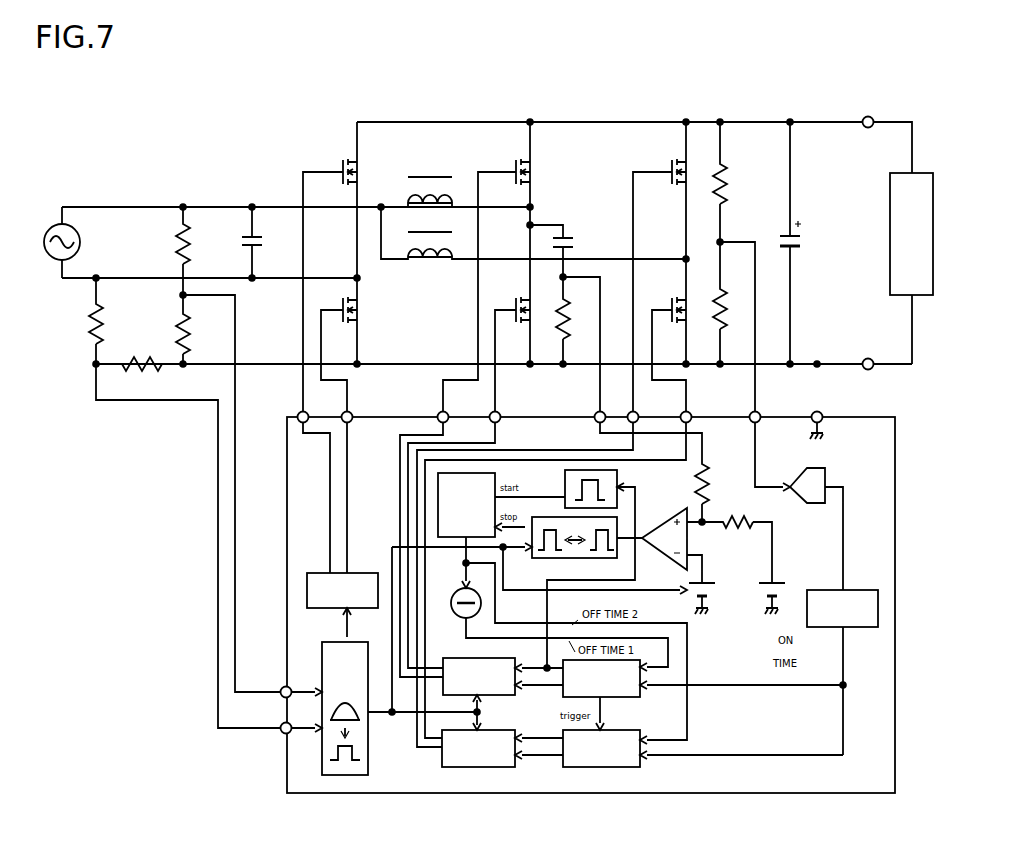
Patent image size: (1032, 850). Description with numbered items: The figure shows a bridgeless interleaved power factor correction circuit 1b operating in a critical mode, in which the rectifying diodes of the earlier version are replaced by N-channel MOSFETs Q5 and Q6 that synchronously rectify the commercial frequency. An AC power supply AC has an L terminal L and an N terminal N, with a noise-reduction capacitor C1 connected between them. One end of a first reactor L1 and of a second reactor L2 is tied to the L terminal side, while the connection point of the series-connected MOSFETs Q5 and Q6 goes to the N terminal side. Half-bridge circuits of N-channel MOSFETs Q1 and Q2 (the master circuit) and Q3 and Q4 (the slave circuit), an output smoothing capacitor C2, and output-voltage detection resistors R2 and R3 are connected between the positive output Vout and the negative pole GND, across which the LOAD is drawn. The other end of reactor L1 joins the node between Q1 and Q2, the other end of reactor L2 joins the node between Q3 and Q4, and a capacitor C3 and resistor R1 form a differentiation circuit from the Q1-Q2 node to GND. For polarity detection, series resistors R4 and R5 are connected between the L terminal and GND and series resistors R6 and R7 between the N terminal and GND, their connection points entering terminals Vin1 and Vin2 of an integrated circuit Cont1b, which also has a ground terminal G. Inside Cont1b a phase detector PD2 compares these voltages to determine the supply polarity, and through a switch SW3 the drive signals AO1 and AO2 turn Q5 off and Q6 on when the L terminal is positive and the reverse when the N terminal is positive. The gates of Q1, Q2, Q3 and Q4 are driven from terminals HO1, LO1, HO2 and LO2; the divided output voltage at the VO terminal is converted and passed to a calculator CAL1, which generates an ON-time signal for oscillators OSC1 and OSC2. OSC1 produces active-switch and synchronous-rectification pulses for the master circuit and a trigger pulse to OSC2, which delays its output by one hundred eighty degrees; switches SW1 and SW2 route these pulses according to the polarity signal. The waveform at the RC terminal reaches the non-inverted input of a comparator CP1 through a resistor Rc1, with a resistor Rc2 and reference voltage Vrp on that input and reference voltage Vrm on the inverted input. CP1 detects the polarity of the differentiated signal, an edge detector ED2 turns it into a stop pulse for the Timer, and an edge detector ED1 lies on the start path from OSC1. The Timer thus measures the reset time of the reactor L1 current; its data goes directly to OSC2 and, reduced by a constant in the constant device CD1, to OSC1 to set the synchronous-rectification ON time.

The bridgeless interleaved power factor correction circuit 1b is at (515, 85).
The AC power supply AC is at (49, 242).
The L terminal L is at (58, 192).
The N terminal N is at (58, 296).
The resistor R4 is at (194, 251).
The capacitor C1 is at (258, 242).
The resistor R6 is at (81, 321).
The resistor R5 is at (193, 329).
The resistor R7 is at (140, 357).
The N-channel MOSFET Q5 is at (330, 270).
The N-channel MOSFET Q6 is at (339, 348).
The first reactor L1 is at (455, 184).
The second reactor L2 is at (533, 233).
The N-channel MOSFET Q1 is at (486, 270).
The N-channel MOSFET Q2 is at (512, 321).
The capacitor C3 is at (561, 251).
The resistor R1 is at (572, 320).
The N-channel MOSFET Q3 is at (659, 270).
The N-channel MOSFET Q4 is at (669, 338).
The output voltage detection resistor R2 is at (729, 182).
The output voltage detection resistor R3 is at (729, 303).
The output smoothing capacitor C2 is at (795, 243).
The load LOAD is at (911, 234).
The output voltage terminal Vout is at (866, 113).
The element GND is at (864, 356).
The integrated circuit Cont1b is at (280, 768).
The drive signal AO1 is at (293, 410).
The drive signal AO2 is at (357, 410).
The terminal HO1 is at (434, 410).
The terminal LO1 is at (505, 410).
The RC terminal RC is at (592, 410).
The terminal HO2 is at (643, 410).
The terminal LO2 is at (695, 410).
The VO terminal VO is at (766, 410).
The ground terminal G is at (820, 418).
The switch SW3 is at (342, 590).
The phase detector PD2 is at (345, 708).
The input terminal Vin1 is at (269, 688).
The input terminal Vin2 is at (269, 724).
The element Timer is at (466, 505).
The edge detector ED1 is at (563, 477).
The edge detector ED2 is at (574, 560).
The comparator CP1 is at (659, 544).
The constant device CD1 is at (469, 621).
The switch SW1 is at (479, 676).
The switch SW2 is at (478, 748).
The oscillator OSC1 is at (601, 678).
The oscillator OSC2 is at (601, 748).
The resistor Rc1 is at (713, 491).
The resistor Rc2 is at (737, 540).
The reference voltage Vrm is at (707, 592).
The reference voltage Vrp is at (776, 592).
The calculator CAL1 is at (842, 672).